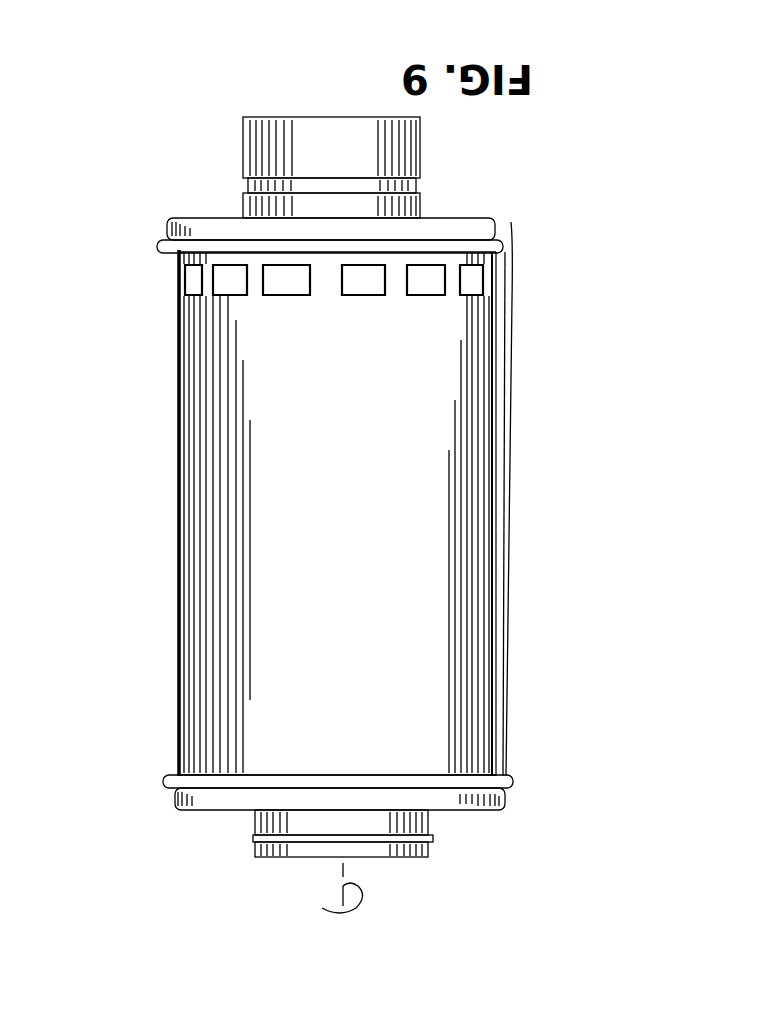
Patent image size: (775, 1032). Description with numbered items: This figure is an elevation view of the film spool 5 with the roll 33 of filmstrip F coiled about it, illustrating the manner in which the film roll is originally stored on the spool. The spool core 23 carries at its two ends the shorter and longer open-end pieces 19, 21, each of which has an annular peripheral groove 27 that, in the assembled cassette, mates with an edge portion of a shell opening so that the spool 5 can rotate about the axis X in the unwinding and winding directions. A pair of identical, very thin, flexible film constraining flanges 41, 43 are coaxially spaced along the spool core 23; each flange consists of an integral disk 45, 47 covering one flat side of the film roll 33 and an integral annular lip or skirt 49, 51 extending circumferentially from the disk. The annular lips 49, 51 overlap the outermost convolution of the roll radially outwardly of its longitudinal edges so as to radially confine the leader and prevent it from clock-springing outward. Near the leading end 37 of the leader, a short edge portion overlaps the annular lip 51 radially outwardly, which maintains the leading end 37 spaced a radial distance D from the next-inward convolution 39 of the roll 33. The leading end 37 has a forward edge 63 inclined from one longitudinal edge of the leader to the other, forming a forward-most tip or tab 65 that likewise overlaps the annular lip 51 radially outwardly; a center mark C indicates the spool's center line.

The film spool 5 is at (520, 443).
The shorter open-end piece 19 is at (512, 224).
The longer open-end piece 21 is at (318, 130).
The spool core 23 is at (434, 860).
The annular peripheral groove 27 is at (248, 186).
The film roll 33 is at (180, 641).
The leading end 37 is at (508, 597).
The next-inward convolution 39 is at (347, 617).
The film constraining flange 41 is at (504, 803).
The film constraining flange 43 is at (166, 228).
The disk 45 is at (470, 811).
The disk 47 is at (200, 220).
The annular lip 49 is at (507, 793).
The annular lip 51 is at (164, 233).
The forward edge 63 is at (512, 510).
The forward-most tip 65 is at (514, 243).
The radial distance D is at (510, 262).
The filmstrip F is at (470, 675).
The axis X is at (314, 903).
The center mark C is at (342, 888).